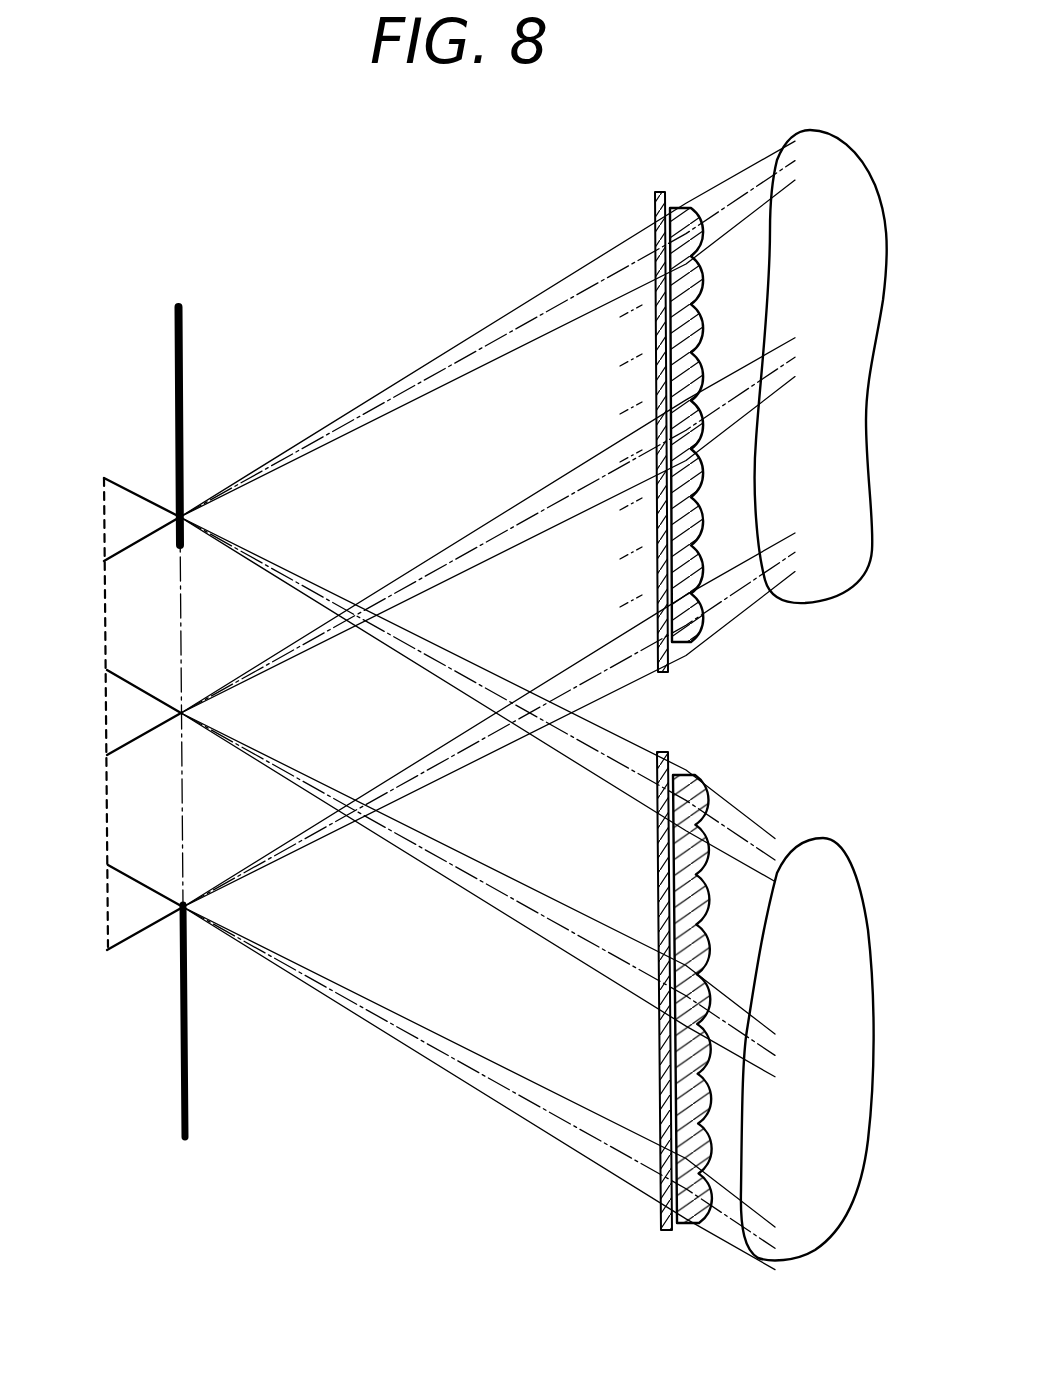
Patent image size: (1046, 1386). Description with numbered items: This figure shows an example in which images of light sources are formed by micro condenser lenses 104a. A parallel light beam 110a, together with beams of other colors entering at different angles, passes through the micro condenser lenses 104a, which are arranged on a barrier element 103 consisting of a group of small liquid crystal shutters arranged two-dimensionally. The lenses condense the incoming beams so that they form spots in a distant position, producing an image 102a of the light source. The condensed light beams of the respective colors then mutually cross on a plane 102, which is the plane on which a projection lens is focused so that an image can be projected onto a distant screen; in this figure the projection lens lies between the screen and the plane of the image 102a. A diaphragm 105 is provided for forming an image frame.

The plane 102 is at (184, 812).
The image of a light source 102a is at (98, 944).
The barrier element 103 is at (660, 1222).
The micro condenser lenses 104a is at (700, 638).
The diaphragm 105 is at (190, 1105).
The parallel light beam 110a is at (512, 312).